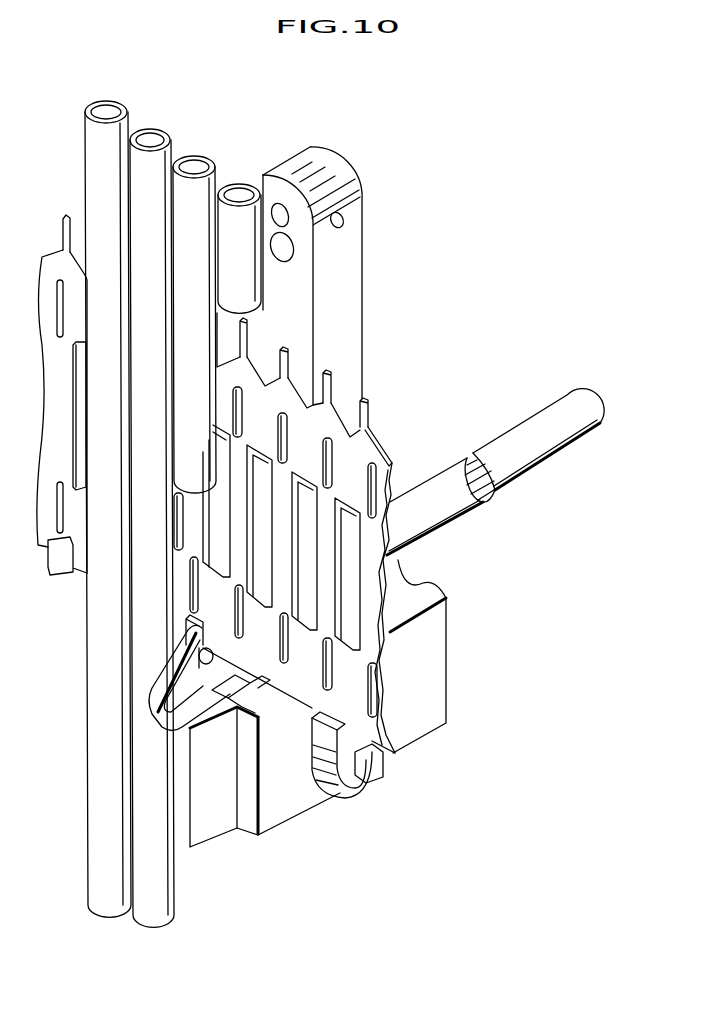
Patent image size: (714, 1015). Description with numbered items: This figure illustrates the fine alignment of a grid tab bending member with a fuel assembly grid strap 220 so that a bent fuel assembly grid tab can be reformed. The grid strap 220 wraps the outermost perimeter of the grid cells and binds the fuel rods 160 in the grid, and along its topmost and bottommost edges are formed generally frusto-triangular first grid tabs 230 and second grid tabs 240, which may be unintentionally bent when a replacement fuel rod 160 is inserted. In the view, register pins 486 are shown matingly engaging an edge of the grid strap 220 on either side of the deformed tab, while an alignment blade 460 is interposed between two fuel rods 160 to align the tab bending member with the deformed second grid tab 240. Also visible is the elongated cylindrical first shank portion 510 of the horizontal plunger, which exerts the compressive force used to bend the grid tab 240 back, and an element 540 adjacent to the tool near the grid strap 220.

The fuel rod 160 is at (178, 170).
The fuel assembly grid strap 220 is at (363, 445).
The first grid tab 230 is at (367, 405).
The second grid tab 240 is at (200, 633).
The alignment blade 460 is at (220, 815).
The register pin 486 is at (165, 709).
The first shank portion 510 is at (560, 457).
The loop 540 is at (153, 676).